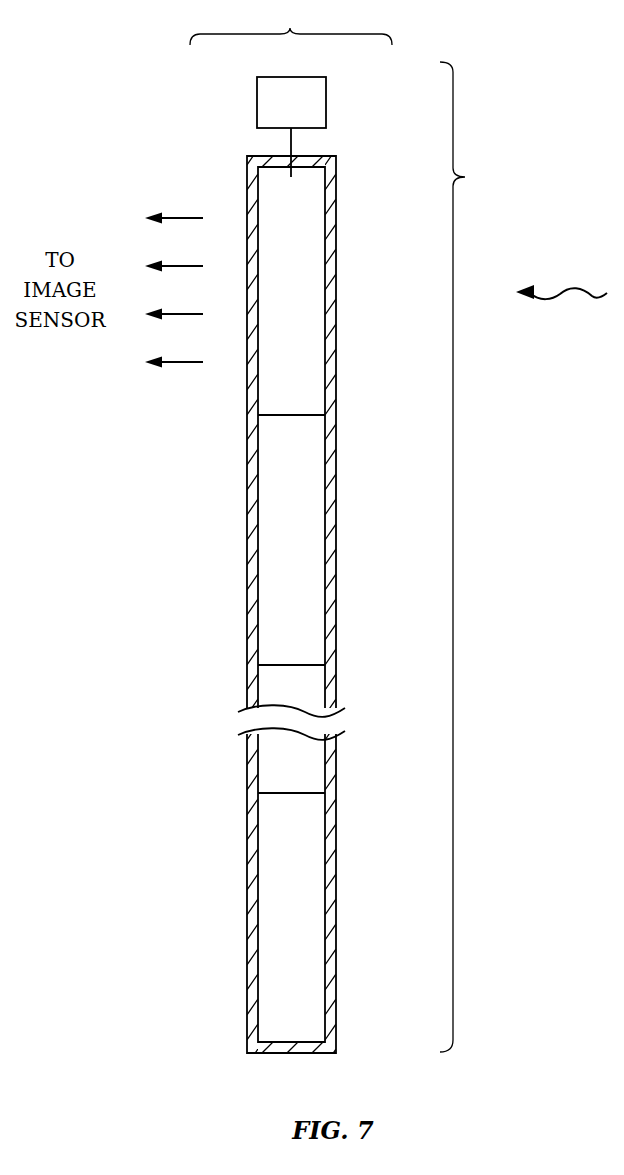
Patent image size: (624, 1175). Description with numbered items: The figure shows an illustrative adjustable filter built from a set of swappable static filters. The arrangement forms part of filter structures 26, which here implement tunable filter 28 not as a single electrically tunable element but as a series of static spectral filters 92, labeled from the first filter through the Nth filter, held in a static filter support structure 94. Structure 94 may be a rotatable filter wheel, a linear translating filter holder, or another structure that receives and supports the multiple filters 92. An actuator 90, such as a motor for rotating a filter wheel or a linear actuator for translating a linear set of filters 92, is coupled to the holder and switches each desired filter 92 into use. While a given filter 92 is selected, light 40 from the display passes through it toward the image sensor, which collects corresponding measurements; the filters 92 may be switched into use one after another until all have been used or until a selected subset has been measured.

The filter structures 26 is at (465, 557).
The tunable filter 28 is at (291, 25).
The light 40 is at (570, 288).
The actuator 90 is at (319, 99).
The static filters 92 is at (318, 198).
The static filter support structure 94 is at (336, 1023).